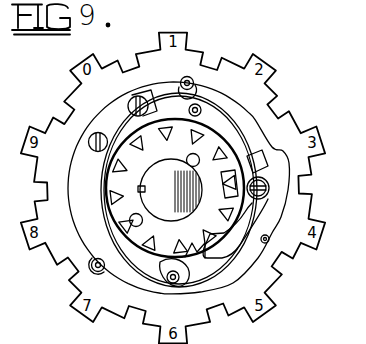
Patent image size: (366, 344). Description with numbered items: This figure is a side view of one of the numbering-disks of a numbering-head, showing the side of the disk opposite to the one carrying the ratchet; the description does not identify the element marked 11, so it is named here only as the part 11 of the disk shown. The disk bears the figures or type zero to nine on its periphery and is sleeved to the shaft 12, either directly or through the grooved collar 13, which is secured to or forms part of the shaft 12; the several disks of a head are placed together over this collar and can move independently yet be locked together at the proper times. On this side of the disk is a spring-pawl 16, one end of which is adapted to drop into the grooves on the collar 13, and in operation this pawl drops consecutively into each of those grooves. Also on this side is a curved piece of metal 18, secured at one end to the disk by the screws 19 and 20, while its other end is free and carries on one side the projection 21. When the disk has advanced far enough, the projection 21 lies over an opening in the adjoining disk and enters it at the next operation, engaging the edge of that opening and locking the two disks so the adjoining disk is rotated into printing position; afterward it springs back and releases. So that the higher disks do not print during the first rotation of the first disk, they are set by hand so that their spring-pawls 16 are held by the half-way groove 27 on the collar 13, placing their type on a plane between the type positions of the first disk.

The ring 11 is at (223, 116).
The shaft 12 is at (170, 190).
The grooved collar 13 is at (173, 190).
The spring-pawl 16 is at (236, 204).
The curved piece of metal 18 is at (178, 185).
The screw 19 is at (105, 132).
The screw 20 is at (136, 102).
The projection 21 is at (166, 277).
The half-way groove 27 is at (198, 264).